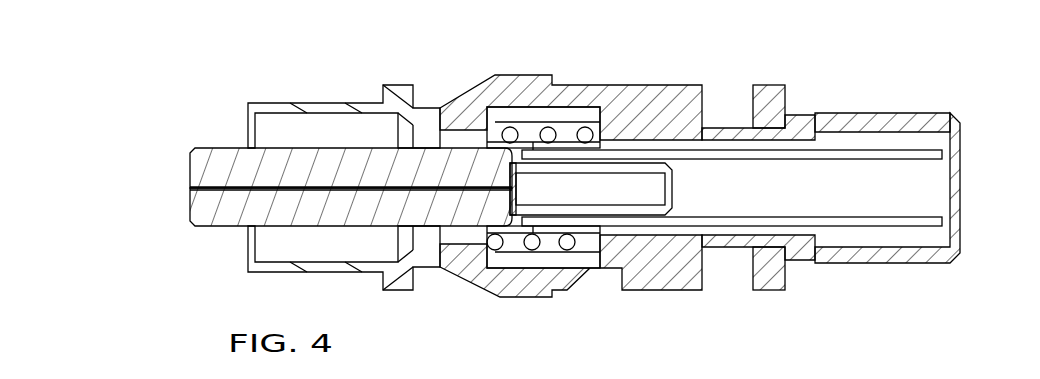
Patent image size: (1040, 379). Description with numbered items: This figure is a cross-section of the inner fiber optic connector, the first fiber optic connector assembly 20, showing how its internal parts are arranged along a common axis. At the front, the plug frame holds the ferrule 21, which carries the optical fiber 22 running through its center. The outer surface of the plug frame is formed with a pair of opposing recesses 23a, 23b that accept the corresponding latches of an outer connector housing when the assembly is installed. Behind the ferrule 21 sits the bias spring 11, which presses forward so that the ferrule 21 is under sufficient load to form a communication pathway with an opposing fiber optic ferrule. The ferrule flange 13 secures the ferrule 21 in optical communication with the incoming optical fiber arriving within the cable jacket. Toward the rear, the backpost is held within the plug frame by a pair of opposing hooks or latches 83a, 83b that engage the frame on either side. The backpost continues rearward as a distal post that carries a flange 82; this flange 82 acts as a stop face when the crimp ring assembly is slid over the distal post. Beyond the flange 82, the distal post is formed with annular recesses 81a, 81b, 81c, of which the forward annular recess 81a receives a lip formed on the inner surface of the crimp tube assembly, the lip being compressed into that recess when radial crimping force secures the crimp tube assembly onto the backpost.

The first fiber optic connector assembly 20 is at (130, 62).
The ferrule 21 is at (200, 213).
The optical fiber 22 is at (203, 187).
The recess 23a is at (433, 100).
The recess 23b is at (433, 282).
The bias spring 11 is at (548, 135).
The ferrule flange 13 is at (523, 222).
The latch 83a is at (630, 105).
The latch 83b is at (627, 268).
The flange 82 is at (770, 270).
The forward annular recess 81a is at (805, 265).
The annular recess 81b is at (855, 110).
The annular recess 81c is at (912, 265).